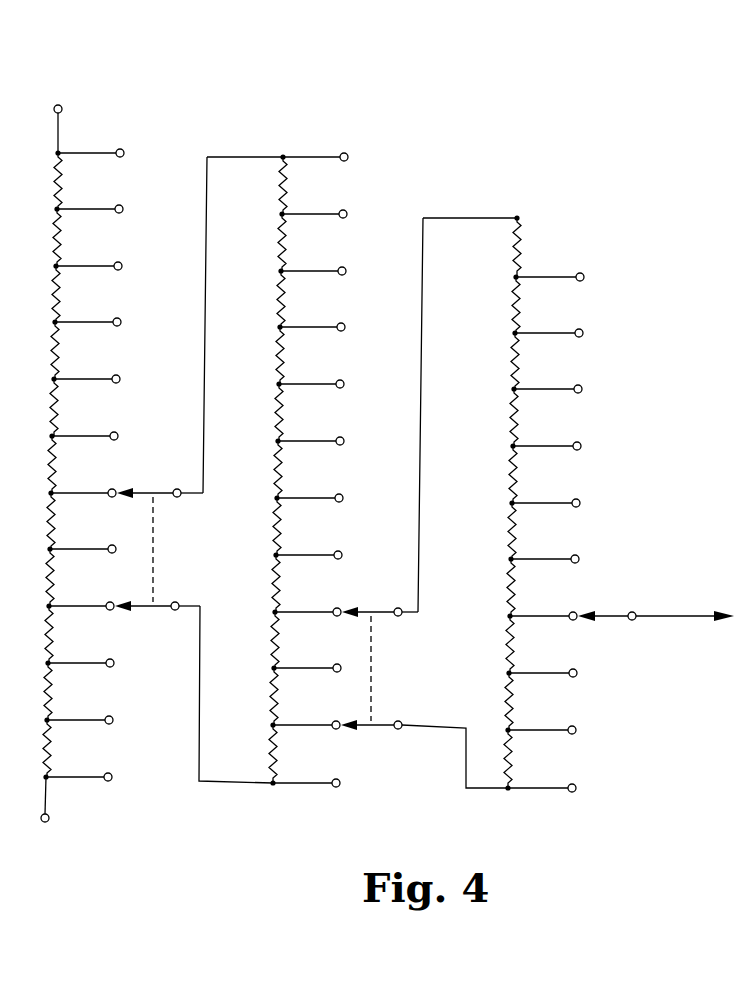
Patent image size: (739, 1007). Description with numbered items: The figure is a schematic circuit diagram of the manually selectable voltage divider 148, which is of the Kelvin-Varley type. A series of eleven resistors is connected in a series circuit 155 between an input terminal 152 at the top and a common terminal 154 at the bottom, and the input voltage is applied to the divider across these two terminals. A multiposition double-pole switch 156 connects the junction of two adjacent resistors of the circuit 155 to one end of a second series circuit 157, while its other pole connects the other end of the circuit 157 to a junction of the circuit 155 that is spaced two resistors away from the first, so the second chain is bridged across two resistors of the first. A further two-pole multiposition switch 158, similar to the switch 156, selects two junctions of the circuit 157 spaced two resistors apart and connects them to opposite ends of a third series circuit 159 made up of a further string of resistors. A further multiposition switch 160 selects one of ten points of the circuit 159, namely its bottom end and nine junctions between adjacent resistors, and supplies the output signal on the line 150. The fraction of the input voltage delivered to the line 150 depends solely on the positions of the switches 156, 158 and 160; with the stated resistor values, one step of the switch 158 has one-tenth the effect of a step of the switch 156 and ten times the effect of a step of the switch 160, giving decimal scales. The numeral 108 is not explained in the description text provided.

The voltage divider 148 is at (295, 853).
The output line 150 is at (688, 620).
The input terminal 152 is at (56, 105).
The common terminal 154 is at (45, 822).
The series circuit 155 is at (24, 314).
The multiposition double-pole switch 156 is at (135, 477).
The series circuit 157 is at (256, 318).
The switch 158 is at (357, 591).
The series circuit 159 is at (494, 343).
The multiposition switch 160 is at (661, 560).
The tap node 108 is at (2, 515).